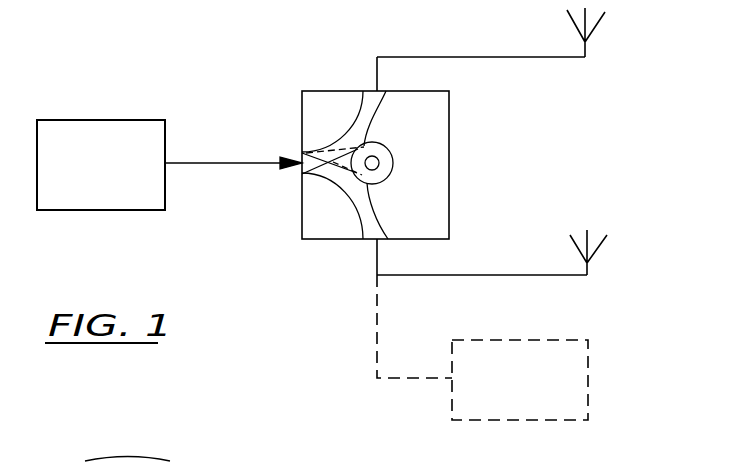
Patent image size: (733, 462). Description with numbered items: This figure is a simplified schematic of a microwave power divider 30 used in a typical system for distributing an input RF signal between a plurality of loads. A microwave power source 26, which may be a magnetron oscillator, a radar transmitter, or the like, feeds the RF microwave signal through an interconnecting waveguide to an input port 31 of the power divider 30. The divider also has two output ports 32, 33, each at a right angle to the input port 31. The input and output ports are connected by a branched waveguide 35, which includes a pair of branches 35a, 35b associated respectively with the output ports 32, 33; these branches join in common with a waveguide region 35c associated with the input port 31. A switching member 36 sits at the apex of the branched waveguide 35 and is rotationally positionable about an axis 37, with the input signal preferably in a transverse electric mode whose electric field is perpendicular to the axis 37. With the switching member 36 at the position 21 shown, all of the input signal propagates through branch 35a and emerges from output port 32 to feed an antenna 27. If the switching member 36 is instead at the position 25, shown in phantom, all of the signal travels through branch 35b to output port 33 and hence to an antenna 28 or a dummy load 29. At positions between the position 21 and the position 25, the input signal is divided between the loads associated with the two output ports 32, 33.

The position 21 is at (293, 176).
The position 25 is at (300, 157).
The microwave power source 26 is at (145, 211).
The antenna 27 is at (588, 42).
The antenna 28 is at (590, 258).
The dummy load 29 is at (588, 378).
The power divider 30 is at (278, 218).
The input port 31 is at (284, 158).
The output port 32 is at (368, 90).
The output port 33 is at (383, 243).
The branched waveguide 35 is at (380, 205).
The waveguide branch 35a is at (374, 110).
The waveguide branch 35b is at (366, 218).
The waveguide region 35c is at (291, 170).
The switching member 36 is at (398, 173).
The axis 37 is at (381, 150).